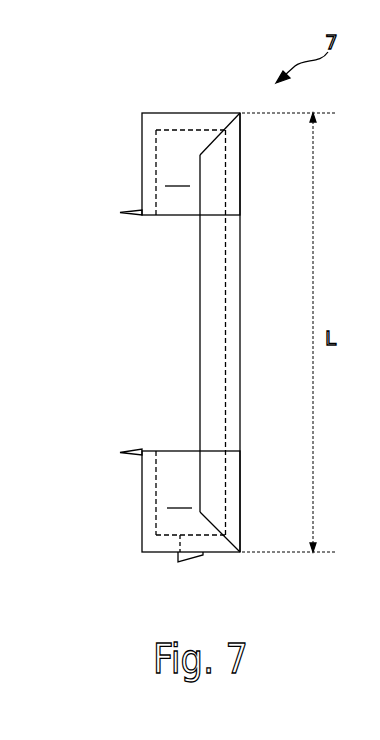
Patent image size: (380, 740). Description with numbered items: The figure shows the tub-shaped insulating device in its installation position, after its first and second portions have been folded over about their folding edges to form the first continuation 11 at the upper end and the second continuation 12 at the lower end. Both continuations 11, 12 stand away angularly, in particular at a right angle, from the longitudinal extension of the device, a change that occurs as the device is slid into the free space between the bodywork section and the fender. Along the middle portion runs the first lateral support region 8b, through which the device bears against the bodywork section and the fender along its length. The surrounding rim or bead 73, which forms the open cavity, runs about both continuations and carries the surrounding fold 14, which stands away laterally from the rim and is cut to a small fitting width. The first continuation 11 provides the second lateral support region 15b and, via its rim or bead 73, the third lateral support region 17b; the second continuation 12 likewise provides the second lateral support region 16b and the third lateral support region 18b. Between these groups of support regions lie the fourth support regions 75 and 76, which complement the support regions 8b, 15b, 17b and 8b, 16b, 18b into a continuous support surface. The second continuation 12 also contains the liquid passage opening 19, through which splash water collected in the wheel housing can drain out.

The first lateral support region 8b is at (233, 360).
The first continuation 11 is at (170, 146).
The second continuation 12 is at (170, 520).
The fold 14 is at (120, 212).
The second lateral support region 15b is at (196, 126).
The second lateral support region 16b is at (187, 540).
The third lateral support region 17b is at (148, 142).
The third lateral support region 18b is at (145, 478).
The liquid passage opening 19 is at (170, 543).
The rim or bead 73 is at (148, 170).
The fourth support region 75 is at (177, 176).
The fourth support region 76 is at (179, 498).